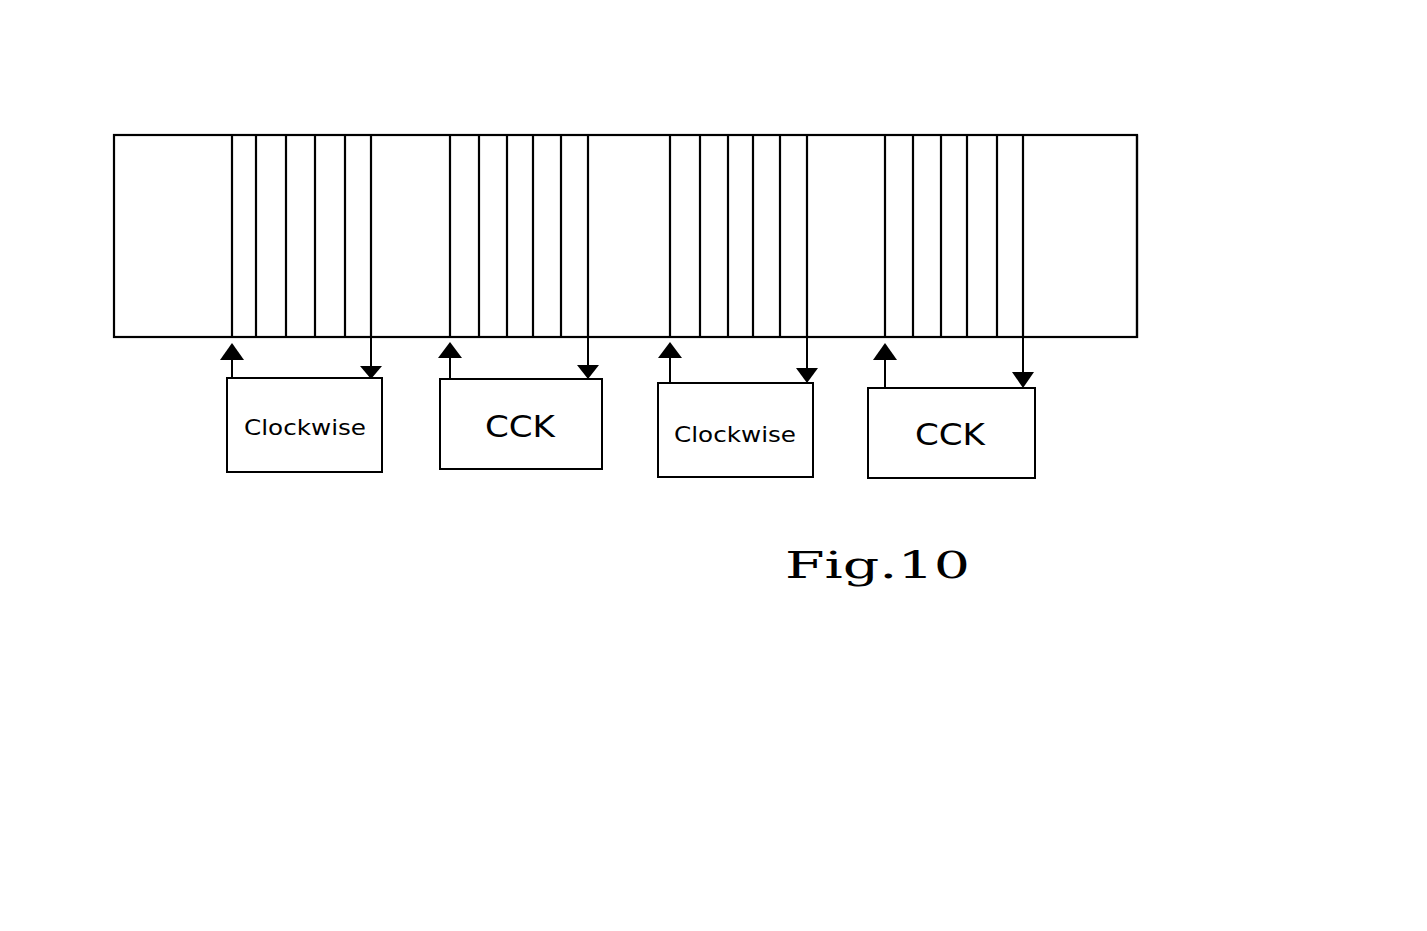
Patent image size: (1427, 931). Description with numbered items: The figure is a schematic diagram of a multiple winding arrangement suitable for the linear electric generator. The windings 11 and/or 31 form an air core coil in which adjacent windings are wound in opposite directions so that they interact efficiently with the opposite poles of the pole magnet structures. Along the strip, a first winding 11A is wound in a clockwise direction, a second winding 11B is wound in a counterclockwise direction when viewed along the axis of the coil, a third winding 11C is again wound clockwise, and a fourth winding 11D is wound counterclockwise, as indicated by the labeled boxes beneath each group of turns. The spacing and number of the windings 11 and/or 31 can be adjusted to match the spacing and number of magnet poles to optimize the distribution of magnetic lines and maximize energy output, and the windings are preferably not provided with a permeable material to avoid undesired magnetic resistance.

The windings 11 is at (1137, 383).
The windings 31 is at (1137, 383).
The first winding 11A is at (275, 140).
The second winding 11B is at (507, 140).
The third winding 11C is at (730, 137).
The fourth winding 11D is at (980, 134).